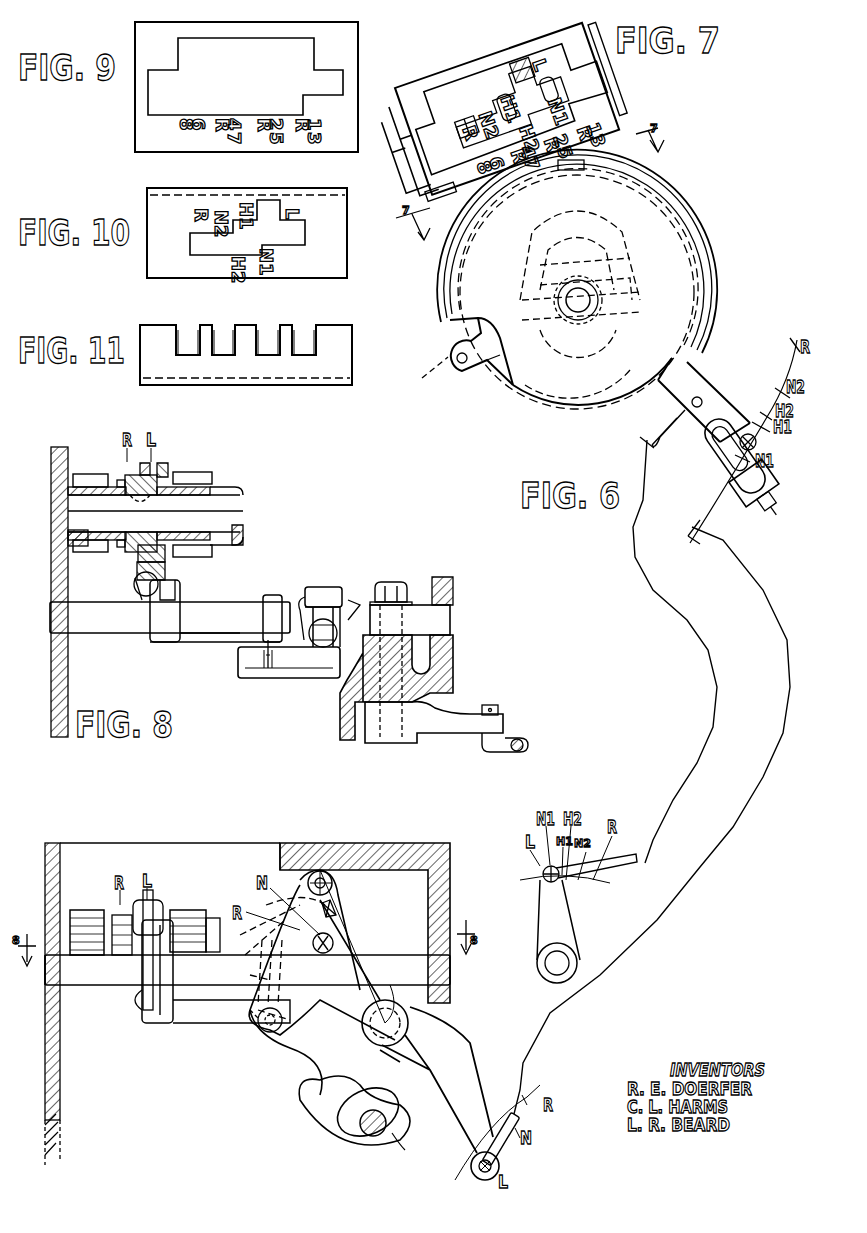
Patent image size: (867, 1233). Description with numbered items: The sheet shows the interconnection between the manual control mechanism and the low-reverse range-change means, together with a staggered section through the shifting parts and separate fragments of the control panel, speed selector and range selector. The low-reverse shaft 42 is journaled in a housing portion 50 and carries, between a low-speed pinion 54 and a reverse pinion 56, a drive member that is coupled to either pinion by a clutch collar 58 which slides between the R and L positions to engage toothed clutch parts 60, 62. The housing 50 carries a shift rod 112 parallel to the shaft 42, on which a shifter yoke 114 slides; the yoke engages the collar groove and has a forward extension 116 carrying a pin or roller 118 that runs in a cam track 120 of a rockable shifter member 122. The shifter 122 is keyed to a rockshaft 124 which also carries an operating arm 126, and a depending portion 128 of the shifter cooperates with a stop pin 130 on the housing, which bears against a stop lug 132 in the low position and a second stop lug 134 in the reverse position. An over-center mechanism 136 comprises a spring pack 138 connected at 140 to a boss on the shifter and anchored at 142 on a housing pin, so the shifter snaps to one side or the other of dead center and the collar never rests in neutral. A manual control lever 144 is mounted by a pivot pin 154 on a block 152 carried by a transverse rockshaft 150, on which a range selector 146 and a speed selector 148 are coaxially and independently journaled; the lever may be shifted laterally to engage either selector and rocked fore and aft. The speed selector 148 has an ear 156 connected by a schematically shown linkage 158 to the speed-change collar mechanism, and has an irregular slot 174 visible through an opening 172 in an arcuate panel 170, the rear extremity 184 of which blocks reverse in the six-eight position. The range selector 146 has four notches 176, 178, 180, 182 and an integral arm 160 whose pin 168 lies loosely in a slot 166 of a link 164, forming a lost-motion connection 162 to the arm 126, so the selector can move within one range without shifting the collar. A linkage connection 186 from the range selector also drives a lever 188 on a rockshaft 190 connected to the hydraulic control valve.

In FIG. 6, the low-reverse shaft 42 is at (216, 916).
In FIG. 8, the low-reverse shaft 42 is at (243, 495).
In FIG. 6, the housing portion 50 is at (62, 1100).
In FIG. 8, the housing portion 50 is at (63, 455).
In FIG. 6, the low-speed pinion 54 is at (192, 908).
In FIG. 8, the low-speed pinion 54 is at (210, 474).
In FIG. 6, the reverse pinion 56 is at (80, 908).
In FIG. 8, the reverse pinion 56 is at (87, 474).
In FIG. 6, the clutch collar 58 is at (152, 902).
In FIG. 8, the clutch collar 58 is at (156, 466).
In FIG. 8, the toothed clutch part 60 is at (170, 470).
In FIG. 6, the toothed clutch part 62 is at (118, 914).
In FIG. 8, the toothed clutch part 62 is at (122, 556).
In FIG. 6, the shift rod 112 is at (88, 978).
In FIG. 8, the shift rod 112 is at (90, 622).
In FIG. 6, the shifter yoke 114 is at (150, 1018).
In FIG. 8, the shifter yoke 114 is at (138, 585).
In FIG. 6, the forward extension of yoke 116 is at (205, 1022).
In FIG. 8, the forward extension of yoke 116 is at (205, 636).
In FIG. 6, the pin or roller 118 is at (264, 1032).
In FIG. 8, the pin or roller 118 is at (268, 672).
In FIG. 6, the cam track 120 is at (252, 1028).
In FIG. 8, the cam track 120 is at (285, 672).
In FIG. 6, the shifter member 122 is at (306, 1040).
In FIG. 8, the shifter member 122 is at (240, 680).
In FIG. 6, the rockshaft 124 is at (380, 1046).
In FIG. 8, the rockshaft 124 is at (392, 582).
In FIG. 6, the operating arm 126 is at (472, 1052).
In FIG. 8, the operating arm 126 is at (456, 735).
In FIG. 6, the depending portion 128 is at (330, 1125).
In FIG. 6, the stop pin 130 is at (373, 1140).
In FIG. 6, the stop lug 132 is at (396, 1140).
In FIG. 6, the second stop lug 134 is at (300, 1104).
In FIG. 6, the over-center mechanism 136 is at (344, 916).
In FIG. 8, the over-center mechanism 136 is at (335, 604).
In FIG. 6, the spring pack 138 is at (332, 905).
In FIG. 6, the spring pack connection 140 is at (330, 882).
In FIG. 8, the spring pack connection 140 is at (318, 680).
In FIG. 6, the anchor pin 142 is at (334, 942).
In FIG. 8, the anchor pin 142 is at (300, 598).
In FIG. 7, the manual control lever 144 is at (518, 68).
In FIG. 6, the manual control lever 144 is at (580, 164).
In FIG. 11, the range selector 146 is at (345, 360).
In FIG. 7, the range selector 146 is at (408, 180).
In FIG. 6, the range selector 146 is at (612, 404).
In FIG. 10, the speed selector 148 is at (340, 248).
In FIG. 7, the speed selector 148 is at (395, 108).
In FIG. 6, the speed selector 148 is at (494, 370).
In FIG. 6, the transverse rockshaft 150 is at (572, 312).
In FIG. 6, the shaft-carried block 152 is at (622, 268).
In FIG. 6, the fore-and-aft pivot pin 154 is at (622, 282).
In FIG. 6, the ear 156 is at (455, 346).
In FIG. 6, the linkage 158 is at (425, 373).
In FIG. 6, the range selector arm 160 is at (725, 412).
In FIG. 6, the lost-motion connection 162 is at (756, 486).
In FIG. 6, the link 164 is at (762, 590).
In FIG. 6, the slot 166 is at (730, 488).
In FIG. 6, the pin 168 is at (722, 455).
In FIG. 9, the panel 170 is at (352, 62).
In FIG. 7, the panel 170 is at (610, 118).
In FIG. 6, the panel 170 is at (665, 198).
In FIG. 9, the opening 172 is at (216, 40).
In FIG. 7, the opening 172 is at (598, 70).
In FIG. 10, the irregular slot 174 is at (190, 243).
In FIG. 11, the notch 176 is at (188, 332).
In FIG. 11, the notch 178 is at (222, 332).
In FIG. 8, the notch 178 is at (355, 590).
In FIG. 11, the notch 180 is at (266, 332).
In FIG. 11, the notch 182 is at (306, 332).
In FIG. 9, the rear extremity of opening 184 is at (150, 90).
In FIG. 7, the rear extremity of opening 184 is at (412, 140).
In FIG. 6, the linkage connection 186 is at (710, 664).
In FIG. 6, the lever 188 is at (572, 935).
In FIG. 6, the rockshaft 190 is at (550, 975).